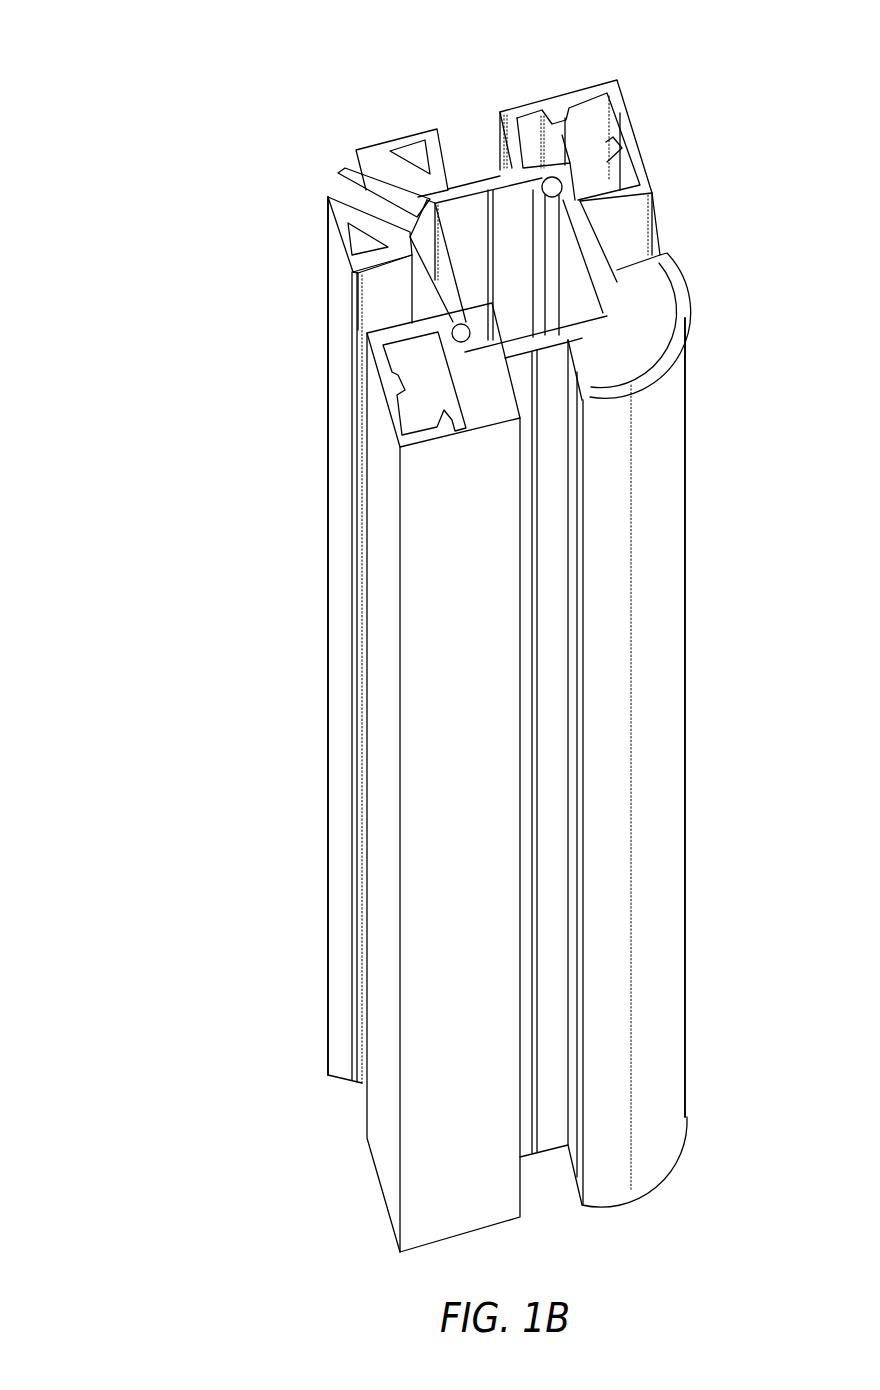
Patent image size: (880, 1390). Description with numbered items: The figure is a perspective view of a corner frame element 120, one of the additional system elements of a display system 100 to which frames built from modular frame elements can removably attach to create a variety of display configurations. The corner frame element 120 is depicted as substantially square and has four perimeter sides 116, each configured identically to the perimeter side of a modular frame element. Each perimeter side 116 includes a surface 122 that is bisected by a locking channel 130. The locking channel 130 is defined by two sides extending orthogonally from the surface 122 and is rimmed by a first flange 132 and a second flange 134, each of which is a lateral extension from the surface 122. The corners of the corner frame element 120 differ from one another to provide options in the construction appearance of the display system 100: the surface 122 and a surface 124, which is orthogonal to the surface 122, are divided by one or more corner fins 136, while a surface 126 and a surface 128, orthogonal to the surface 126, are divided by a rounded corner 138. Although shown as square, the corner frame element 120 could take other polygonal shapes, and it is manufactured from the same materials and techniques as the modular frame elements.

The display system 100 is at (124, 35).
The corner frame element 120 is at (164, 112).
The perimeter side 116 is at (530, 94).
The surface 122 is at (337, 250).
The surface 124 is at (412, 138).
The surface 126 is at (640, 138).
The surface 128 is at (603, 512).
The locking channel 130 is at (378, 308).
The first flange 132 is at (353, 295).
The second flange 134 is at (367, 337).
The corner fin 136 is at (342, 173).
The rounded corner 138 is at (673, 381).